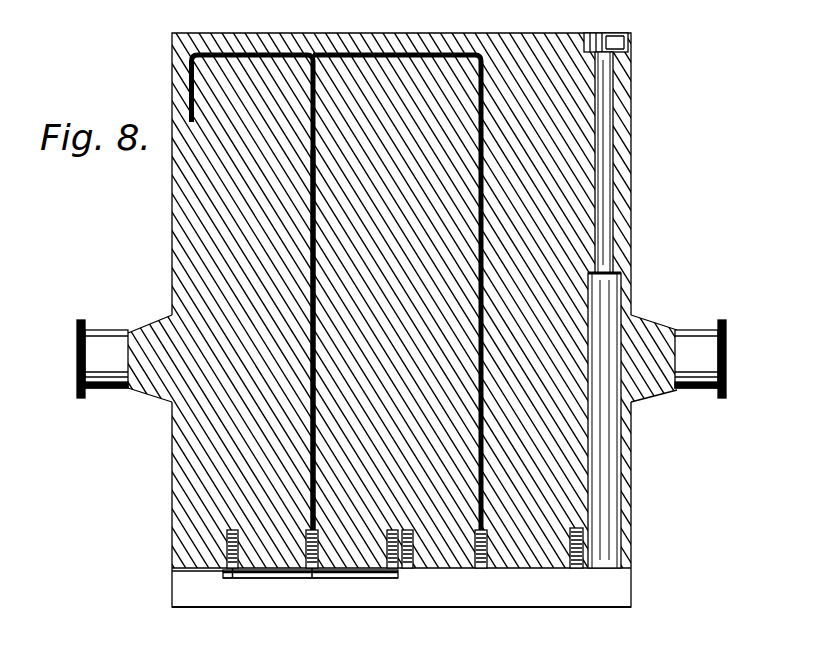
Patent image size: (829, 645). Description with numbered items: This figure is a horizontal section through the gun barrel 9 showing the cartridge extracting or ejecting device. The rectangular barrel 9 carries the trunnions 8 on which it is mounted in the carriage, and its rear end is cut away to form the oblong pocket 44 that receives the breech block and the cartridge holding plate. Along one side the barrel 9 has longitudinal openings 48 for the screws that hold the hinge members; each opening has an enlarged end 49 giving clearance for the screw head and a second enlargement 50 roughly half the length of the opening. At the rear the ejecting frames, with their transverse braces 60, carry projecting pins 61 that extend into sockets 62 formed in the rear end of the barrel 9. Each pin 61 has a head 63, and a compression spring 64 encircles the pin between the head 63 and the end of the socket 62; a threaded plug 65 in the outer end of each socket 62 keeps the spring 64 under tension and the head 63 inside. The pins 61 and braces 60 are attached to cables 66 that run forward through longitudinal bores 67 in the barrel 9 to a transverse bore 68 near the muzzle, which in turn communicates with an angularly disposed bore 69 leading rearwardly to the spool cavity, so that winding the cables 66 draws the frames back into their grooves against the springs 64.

The trunnion 8 is at (117, 385).
The gun barrel 9 is at (638, 115).
The oblong pocket 44 is at (640, 590).
The longitudinal opening 48 is at (605, 245).
The enlarged end of opening 49 is at (627, 47).
The enlargement 50 is at (621, 470).
The transverse brace 60 is at (290, 580).
The projecting pin 61 is at (228, 570).
The socket 62 is at (227, 532).
The head 63 is at (227, 558).
The compression spring 64 is at (227, 540).
The plug 65 is at (205, 570).
The cable 66 is at (316, 88).
The longitudinal bore 67 is at (316, 185).
The transverse bore 68 is at (288, 52).
The angularly disposed bore 69 is at (188, 78).